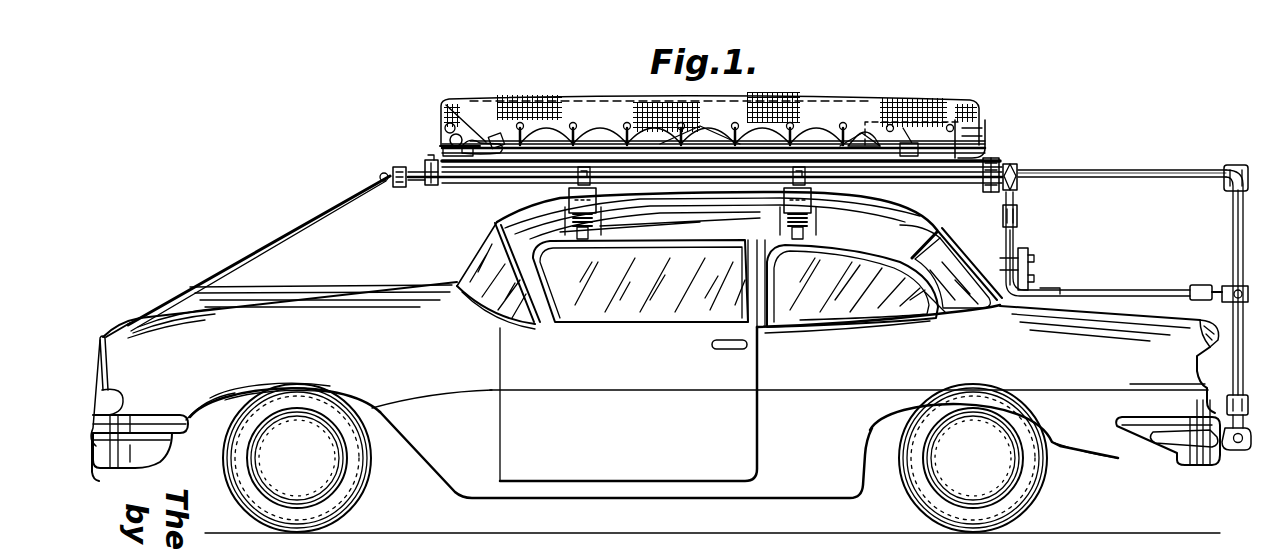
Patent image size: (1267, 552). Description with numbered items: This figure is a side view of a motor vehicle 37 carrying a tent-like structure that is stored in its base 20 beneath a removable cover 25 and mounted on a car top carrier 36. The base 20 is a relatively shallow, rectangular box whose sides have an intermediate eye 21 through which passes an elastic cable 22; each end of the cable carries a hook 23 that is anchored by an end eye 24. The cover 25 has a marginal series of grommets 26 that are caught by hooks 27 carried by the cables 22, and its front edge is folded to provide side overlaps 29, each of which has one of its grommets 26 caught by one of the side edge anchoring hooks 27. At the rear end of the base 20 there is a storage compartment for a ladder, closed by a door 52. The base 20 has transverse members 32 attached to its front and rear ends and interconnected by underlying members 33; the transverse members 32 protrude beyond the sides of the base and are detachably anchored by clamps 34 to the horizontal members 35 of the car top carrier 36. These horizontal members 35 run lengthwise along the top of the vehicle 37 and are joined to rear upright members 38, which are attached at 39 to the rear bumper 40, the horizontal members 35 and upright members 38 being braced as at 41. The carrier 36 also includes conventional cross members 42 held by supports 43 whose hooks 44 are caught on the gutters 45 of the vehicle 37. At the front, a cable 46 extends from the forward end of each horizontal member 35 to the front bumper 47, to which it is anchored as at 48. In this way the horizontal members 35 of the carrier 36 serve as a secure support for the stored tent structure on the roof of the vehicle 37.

The base 20 is at (535, 150).
The intermediate eye 21 is at (707, 150).
The elastic cable 22 is at (547, 145).
The hook 23 is at (473, 152).
The end eye 24 is at (447, 153).
The cover 25 is at (870, 98).
The grommets 26 is at (577, 128).
The hooks 27 is at (693, 130).
The side overlaps 29 is at (450, 124).
The transverse members 32 is at (420, 168).
The underlying members 33 is at (953, 162).
The clamps 34 is at (423, 178).
The horizontal members 35 is at (1080, 170).
The car top carrier 36 is at (1152, 167).
The motor vehicle 37 is at (1159, 328).
The rear upright members 38 is at (1236, 229).
The attachment 39 is at (1237, 444).
The rear bumper 40 is at (1190, 447).
The brace 41 is at (1013, 242).
The cross members 42 is at (570, 192).
The supports 43 is at (588, 218).
The hooks 44 is at (582, 238).
The gutters 45 is at (690, 230).
The cable 46 is at (262, 243).
The front bumper 47 is at (148, 422).
The anchorage 48 is at (97, 452).
The door 52 is at (933, 142).